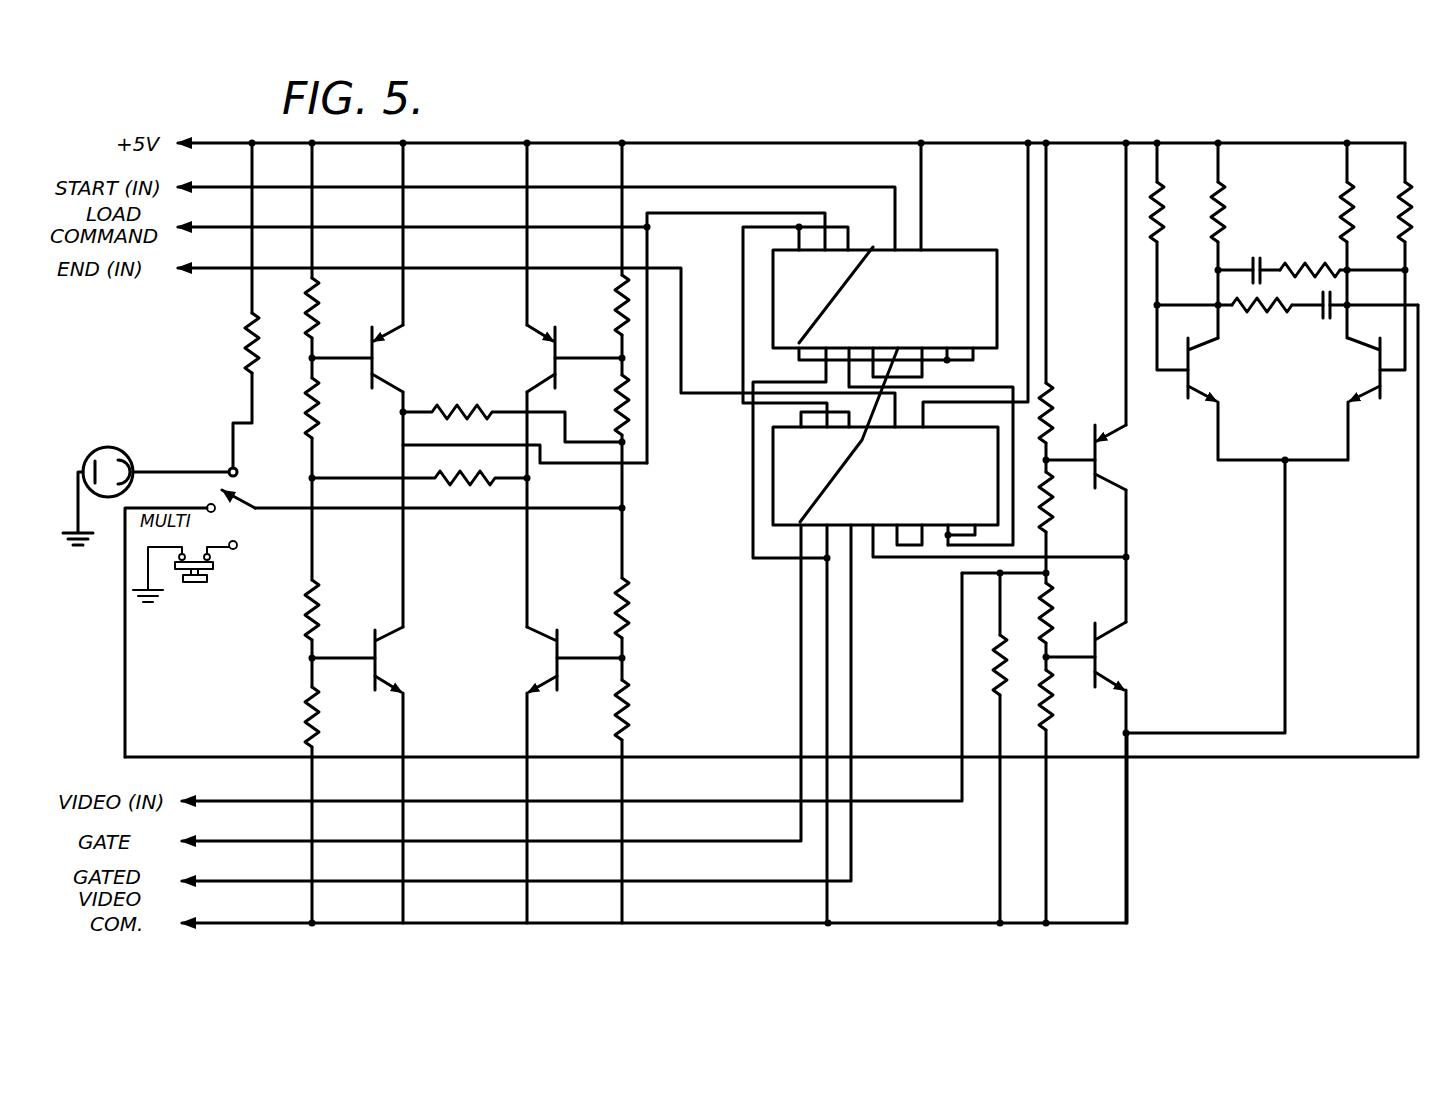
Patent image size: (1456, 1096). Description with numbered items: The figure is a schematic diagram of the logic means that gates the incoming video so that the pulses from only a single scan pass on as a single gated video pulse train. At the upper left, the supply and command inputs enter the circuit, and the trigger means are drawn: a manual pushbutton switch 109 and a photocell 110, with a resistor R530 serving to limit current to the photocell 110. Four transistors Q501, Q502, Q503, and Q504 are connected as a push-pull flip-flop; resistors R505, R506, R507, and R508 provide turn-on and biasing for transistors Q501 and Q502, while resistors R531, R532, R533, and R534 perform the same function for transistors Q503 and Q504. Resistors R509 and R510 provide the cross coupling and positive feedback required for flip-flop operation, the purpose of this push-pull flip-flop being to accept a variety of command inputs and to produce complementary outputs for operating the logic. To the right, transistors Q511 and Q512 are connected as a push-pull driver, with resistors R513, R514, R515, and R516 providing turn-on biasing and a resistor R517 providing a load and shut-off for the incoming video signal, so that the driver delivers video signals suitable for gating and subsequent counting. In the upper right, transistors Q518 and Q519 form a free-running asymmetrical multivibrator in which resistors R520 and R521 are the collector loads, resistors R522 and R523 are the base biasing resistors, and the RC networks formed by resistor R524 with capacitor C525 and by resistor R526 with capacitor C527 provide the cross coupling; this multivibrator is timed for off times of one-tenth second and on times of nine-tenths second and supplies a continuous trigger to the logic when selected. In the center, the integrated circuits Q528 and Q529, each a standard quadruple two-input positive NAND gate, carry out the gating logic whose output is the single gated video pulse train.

The photocell 110 is at (122, 452).
The manual switch 109 is at (197, 582).
The resistor R505 is at (340, 308).
The resistor R506 is at (340, 408).
The resistor R507 is at (340, 607).
The resistor R508 is at (340, 717).
The resistor R509 is at (512, 412).
The resistor R510 is at (419, 467).
The resistor R513 is at (1074, 411).
The resistor R514 is at (1074, 502).
The resistor R515 is at (1074, 611).
The resistor R516 is at (1074, 700).
The resistor R517 is at (997, 653).
The collector load resistor R520 is at (1250, 212).
The collector load resistor R521 is at (1327, 203).
The base biasing resistor R522 is at (1183, 204).
The base biasing resistor R523 is at (1386, 207).
The resistor R524 is at (1310, 260).
The resistor R526 is at (1257, 317).
The resistor R530 is at (227, 343).
The resistor R531 is at (594, 304).
The resistor R532 is at (594, 405).
The resistor R533 is at (653, 608).
The resistor R534 is at (653, 710).
The capacitor C525 is at (1257, 256).
The capacitor C527 is at (1313, 319).
The transistor Q501 is at (409, 358).
The transistor Q502 is at (416, 659).
The transistor Q503 is at (525, 358).
The transistor Q504 is at (527, 659).
The transistor Q511 is at (1132, 457).
The transistor Q512 is at (1135, 656).
The transistor Q518 is at (1224, 369).
The transistor Q519 is at (1350, 369).
The integrated circuit Q528 is at (925, 307).
The integrated circuit Q529 is at (932, 489).